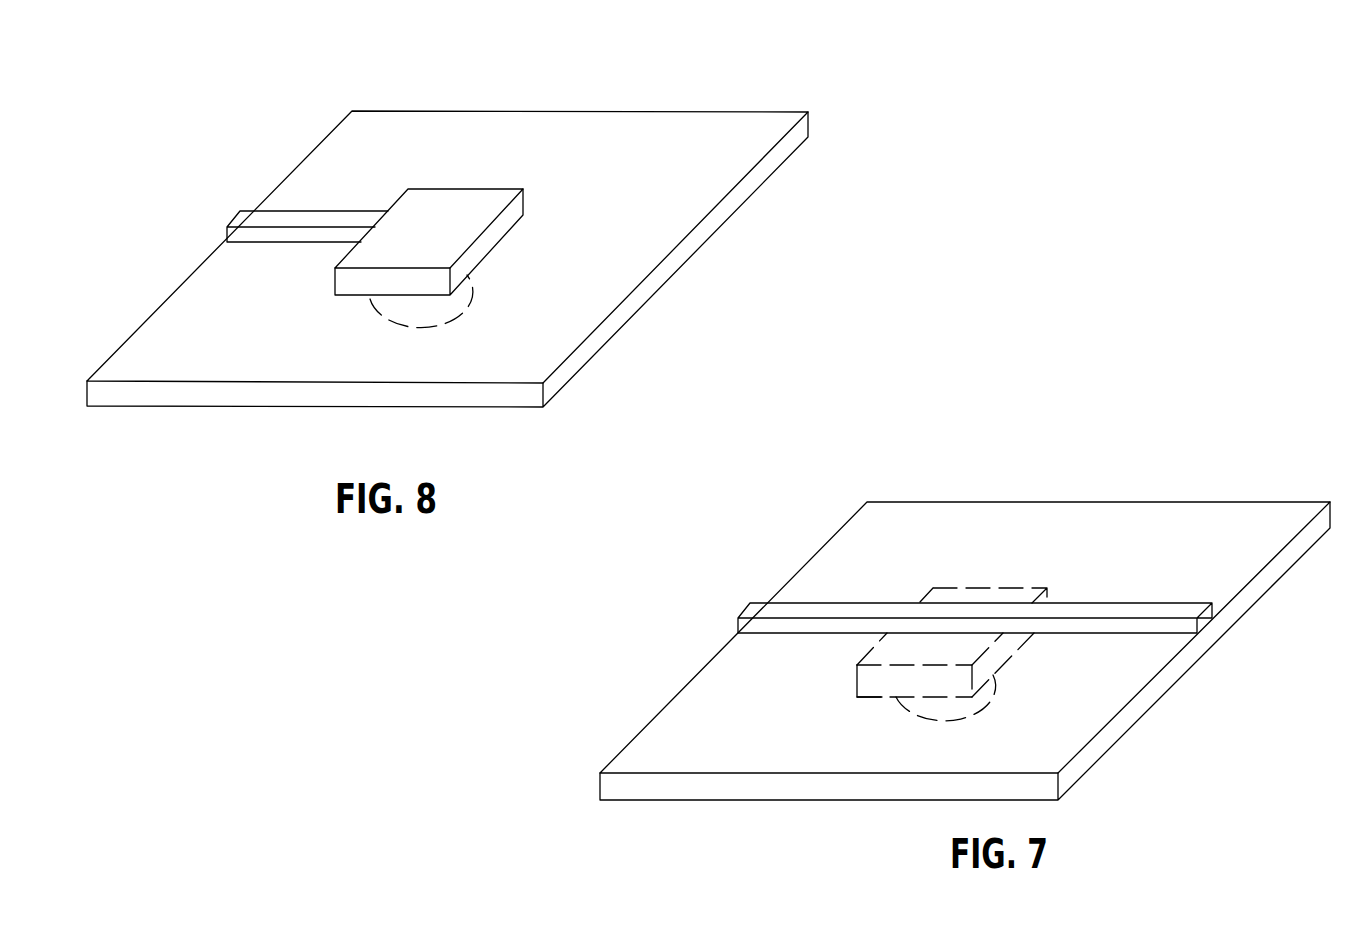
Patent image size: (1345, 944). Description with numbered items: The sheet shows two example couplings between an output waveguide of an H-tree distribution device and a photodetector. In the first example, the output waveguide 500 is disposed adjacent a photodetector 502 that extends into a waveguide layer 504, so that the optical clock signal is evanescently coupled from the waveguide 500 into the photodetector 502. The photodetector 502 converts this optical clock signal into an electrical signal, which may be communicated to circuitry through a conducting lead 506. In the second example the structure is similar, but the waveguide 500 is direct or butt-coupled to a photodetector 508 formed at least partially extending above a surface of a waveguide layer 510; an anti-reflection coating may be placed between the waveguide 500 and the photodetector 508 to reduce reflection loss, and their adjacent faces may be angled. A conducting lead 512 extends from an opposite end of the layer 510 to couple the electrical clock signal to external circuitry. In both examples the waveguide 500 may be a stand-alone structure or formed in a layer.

In FIG. 8, the output waveguide 500 is at (252, 222).
In FIG. 7, the output waveguide 500 is at (790, 608).
In FIG. 7, the photodetector 502 is at (880, 652).
In FIG. 7, the waveguide layer 504 is at (1142, 510).
In FIG. 7, the conducting lead 506 is at (978, 708).
In FIG. 8, the photodetector 508 is at (417, 203).
In FIG. 8, the waveguide layer 510 is at (613, 122).
In FIG. 8, the conducting lead 512 is at (458, 307).